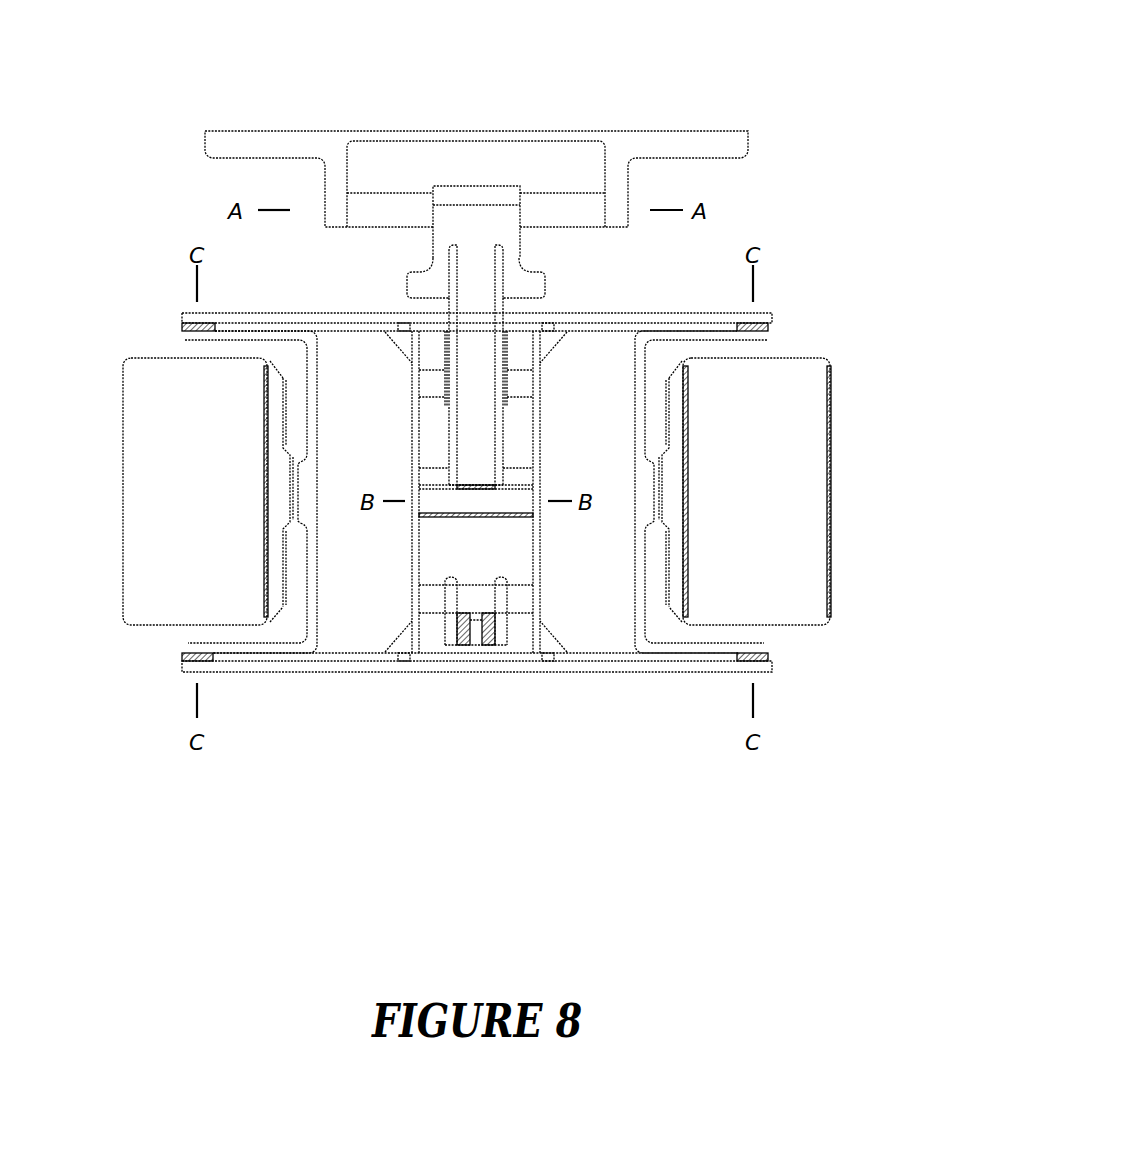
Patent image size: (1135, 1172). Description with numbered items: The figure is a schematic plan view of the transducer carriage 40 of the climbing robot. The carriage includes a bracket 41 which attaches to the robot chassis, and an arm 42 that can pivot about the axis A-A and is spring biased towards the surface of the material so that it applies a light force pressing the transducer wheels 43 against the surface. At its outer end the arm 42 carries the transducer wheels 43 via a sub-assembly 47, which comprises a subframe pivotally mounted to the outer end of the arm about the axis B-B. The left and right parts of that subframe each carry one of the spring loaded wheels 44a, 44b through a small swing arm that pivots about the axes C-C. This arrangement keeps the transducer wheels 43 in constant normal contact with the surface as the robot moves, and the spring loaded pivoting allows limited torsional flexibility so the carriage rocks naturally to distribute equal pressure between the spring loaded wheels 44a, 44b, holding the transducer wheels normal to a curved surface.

The damper assembly 40 is at (826, 235).
The bracket 41 is at (716, 131).
The arm 42 is at (477, 448).
The transducer wheels 43 is at (472, 648).
The spring loaded wheel 44a is at (838, 447).
The spring loaded wheel 44b is at (116, 470).
The sub-assembly 47 is at (565, 678).